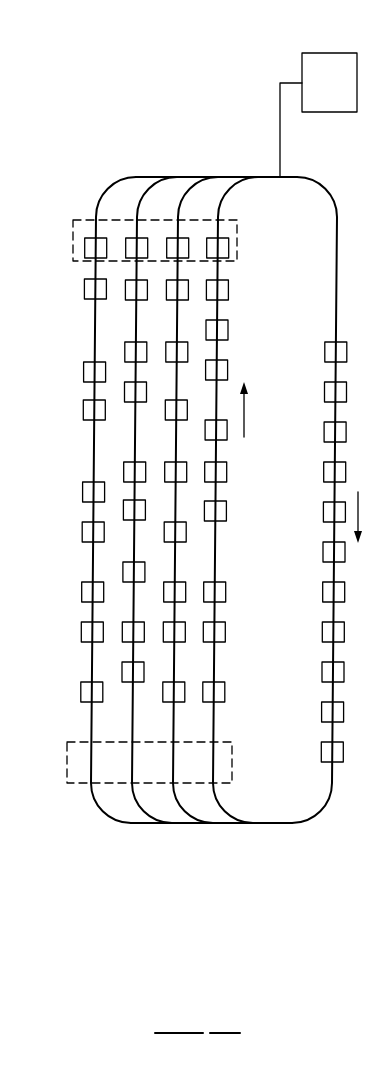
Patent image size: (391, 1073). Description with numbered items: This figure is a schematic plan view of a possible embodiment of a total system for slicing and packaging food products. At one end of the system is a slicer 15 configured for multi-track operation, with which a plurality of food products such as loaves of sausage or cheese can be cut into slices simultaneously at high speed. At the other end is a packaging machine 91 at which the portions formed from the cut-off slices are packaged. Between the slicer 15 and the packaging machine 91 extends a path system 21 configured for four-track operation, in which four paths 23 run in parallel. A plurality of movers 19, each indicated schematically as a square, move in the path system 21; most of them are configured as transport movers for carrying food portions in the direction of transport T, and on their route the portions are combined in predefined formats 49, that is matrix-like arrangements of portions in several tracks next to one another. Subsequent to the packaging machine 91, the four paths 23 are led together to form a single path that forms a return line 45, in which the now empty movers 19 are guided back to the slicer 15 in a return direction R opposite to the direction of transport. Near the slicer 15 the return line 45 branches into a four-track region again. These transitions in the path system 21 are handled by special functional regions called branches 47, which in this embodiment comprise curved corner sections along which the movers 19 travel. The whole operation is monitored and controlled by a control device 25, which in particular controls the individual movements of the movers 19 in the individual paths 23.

The path system 21 is at (120, 130).
The branches 47 is at (192, 150).
The control device 25 is at (341, 65).
The packaging machine 91 is at (238, 240).
The return line 45 is at (338, 298).
The format 49 is at (252, 301).
The paths 23 is at (134, 440).
The movers 19 is at (221, 690).
The slicer 15 is at (77, 785).